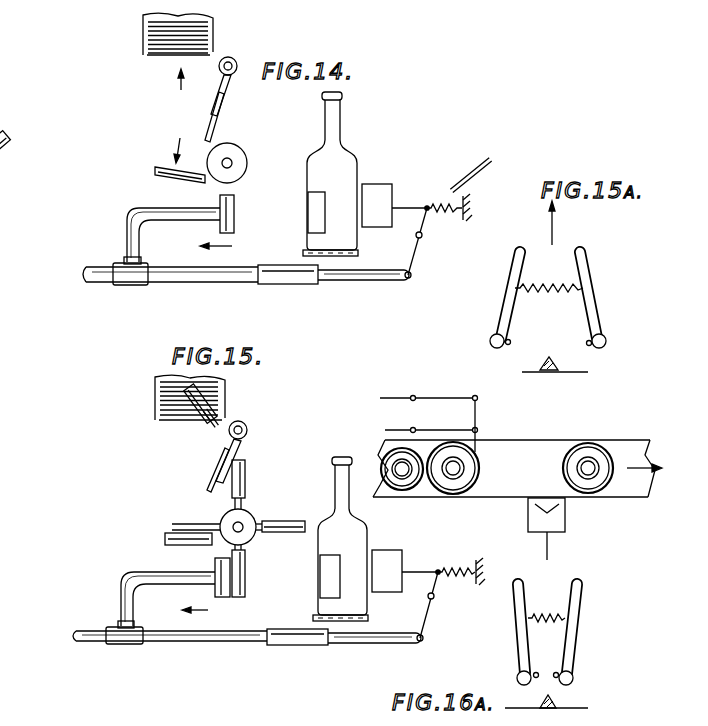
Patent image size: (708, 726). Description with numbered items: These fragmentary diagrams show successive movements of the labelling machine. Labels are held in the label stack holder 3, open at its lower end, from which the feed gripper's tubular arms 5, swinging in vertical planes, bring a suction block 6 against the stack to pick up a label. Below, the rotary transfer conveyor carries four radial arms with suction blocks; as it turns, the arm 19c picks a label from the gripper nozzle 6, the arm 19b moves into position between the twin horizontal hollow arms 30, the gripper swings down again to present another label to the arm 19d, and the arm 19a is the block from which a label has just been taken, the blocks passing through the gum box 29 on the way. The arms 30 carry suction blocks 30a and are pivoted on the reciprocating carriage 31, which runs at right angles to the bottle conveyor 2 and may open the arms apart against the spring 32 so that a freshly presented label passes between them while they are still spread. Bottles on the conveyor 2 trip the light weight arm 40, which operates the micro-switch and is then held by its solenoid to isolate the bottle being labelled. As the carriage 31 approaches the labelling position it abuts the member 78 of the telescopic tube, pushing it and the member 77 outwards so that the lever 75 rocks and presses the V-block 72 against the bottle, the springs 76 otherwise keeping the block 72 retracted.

In FIG. 14, the bottle conveyor 2 is at (335, 259).
In FIG. 15, the bottle conveyor 2 is at (347, 627).
In FIG. 16A, the bottle conveyor 2 is at (517, 480).
In FIG. 14, the label stack holder 3 is at (213, 31).
In FIG. 15, the label stack holder 3 is at (225, 398).
In FIG. 14, the tubular arms 5 is at (226, 92).
In FIG. 15, the tubular arms 5 is at (242, 448).
In FIG. 14, the suction block 6 is at (217, 117).
In FIG. 15, the suction block 6 is at (214, 490).
In FIG. 14, the transfer conveyor suction block 19a is at (266, 212).
In FIG. 15, the transfer conveyor suction block 19a is at (276, 524).
In FIG. 14, the transfer conveyor arm 19b is at (176, 207).
In FIG. 15A, the transfer conveyor arm 19b is at (555, 357).
In FIG. 15, the transfer conveyor arm 19b is at (246, 578).
In FIG. 16A, the transfer conveyor arm 19b is at (556, 700).
In FIG. 14, the transfer conveyor arm 19c is at (192, 120).
In FIG. 15, the transfer conveyor arm 19c is at (180, 527).
In FIG. 14, the transfer conveyor arm 19d is at (267, 127).
In FIG. 15, the transfer conveyor arm 19d is at (246, 474).
In FIG. 14, the gum box 29 is at (157, 171).
In FIG. 14, the twin horizontal hollow arms 30 is at (185, 214).
In FIG. 15A, the twin horizontal hollow arms 30 is at (513, 278).
In FIG. 15, the twin horizontal hollow arms 30 is at (183, 580).
In FIG. 16A, the twin horizontal hollow arms 30 is at (519, 607).
In FIG. 14, the suction blocks 30a is at (235, 226).
In FIG. 15A, the suction blocks 30a is at (492, 342).
In FIG. 15, the suction blocks 30a is at (222, 598).
In FIG. 16A, the suction blocks 30a is at (518, 681).
In FIG. 14, the reciprocating carriage 31 is at (136, 274).
In FIG. 15, the reciprocating carriage 31 is at (132, 634).
In FIG. 15A, the spring 32 is at (539, 290).
In FIG. 16A, the spring 32 is at (534, 621).
In FIG. 16A, the light weight arm 40 is at (473, 452).
In FIG. 14, the V-block 72 is at (383, 199).
In FIG. 15, the V-block 72 is at (385, 564).
In FIG. 16A, the V-block 72 is at (549, 524).
In FIG. 14, the lever 75 is at (415, 252).
In FIG. 15, the lever 75 is at (428, 614).
In FIG. 14, the springs 76 is at (443, 205).
In FIG. 15, the springs 76 is at (452, 569).
In FIG. 14, the telescopic tube member 77 is at (388, 282).
In FIG. 15, the telescopic tube member 77 is at (390, 644).
In FIG. 14, the telescopic tube member 78 is at (289, 277).
In FIG. 15, the telescopic tube member 78 is at (297, 640).